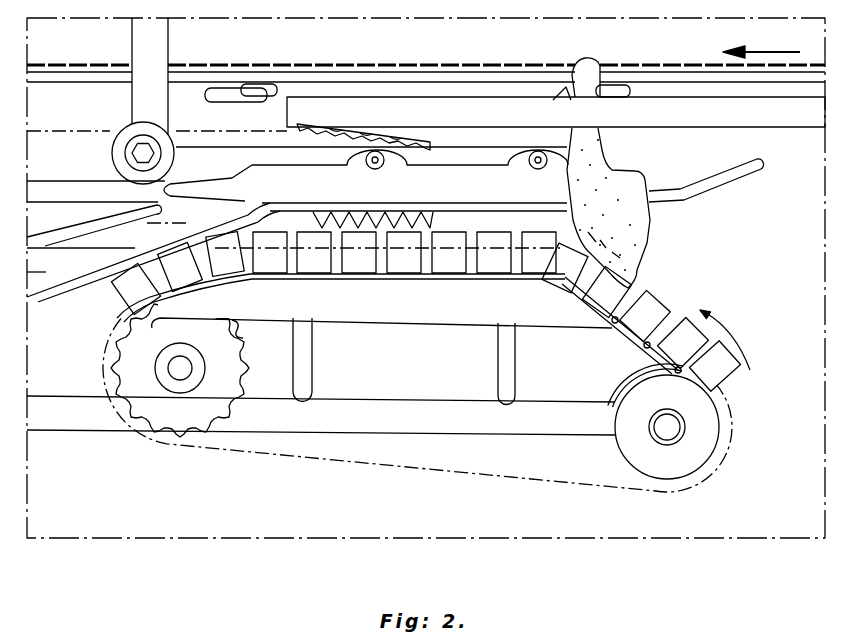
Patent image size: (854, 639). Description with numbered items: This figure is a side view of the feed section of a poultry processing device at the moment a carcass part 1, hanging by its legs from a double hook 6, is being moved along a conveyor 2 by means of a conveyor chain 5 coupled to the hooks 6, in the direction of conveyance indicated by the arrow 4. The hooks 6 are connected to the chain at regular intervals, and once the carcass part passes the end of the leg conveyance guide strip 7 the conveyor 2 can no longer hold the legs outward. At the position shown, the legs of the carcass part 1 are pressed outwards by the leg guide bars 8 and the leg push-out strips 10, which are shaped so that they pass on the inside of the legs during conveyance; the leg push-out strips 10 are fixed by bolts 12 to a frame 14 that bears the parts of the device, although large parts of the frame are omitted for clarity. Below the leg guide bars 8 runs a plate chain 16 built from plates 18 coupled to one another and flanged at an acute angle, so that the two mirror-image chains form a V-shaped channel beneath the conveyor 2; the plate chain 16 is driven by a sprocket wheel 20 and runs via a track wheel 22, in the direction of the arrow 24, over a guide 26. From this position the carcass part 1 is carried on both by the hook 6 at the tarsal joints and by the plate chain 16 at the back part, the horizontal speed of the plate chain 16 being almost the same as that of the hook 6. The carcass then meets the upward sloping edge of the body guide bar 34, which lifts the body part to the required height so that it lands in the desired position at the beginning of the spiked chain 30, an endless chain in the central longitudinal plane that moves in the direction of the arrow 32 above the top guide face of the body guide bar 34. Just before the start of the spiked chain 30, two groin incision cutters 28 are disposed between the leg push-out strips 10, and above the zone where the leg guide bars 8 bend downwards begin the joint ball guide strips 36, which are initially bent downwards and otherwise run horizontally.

The carcass part 1 is at (597, 170).
The conveyor 2 is at (538, 60).
The arrow 4 is at (768, 52).
The conveyor chain 5 is at (440, 64).
The double hook 6 is at (260, 91).
The leg conveyance guide strip 7 is at (795, 118).
The leg guide bar 8 is at (373, 207).
The leg push-out strip 10 is at (470, 186).
The bolt 12 is at (363, 168).
The frame 14 is at (46, 210).
The plate chain 16 is at (522, 482).
The plate 18 is at (135, 288).
The sprocket wheel 20 is at (156, 412).
The track wheel 22 is at (637, 372).
The arrow 24 is at (727, 333).
The guide 26 is at (352, 312).
The groin incision cutter 28 is at (420, 198).
The spiked chain 30 is at (415, 140).
The arrow 32 is at (283, 220).
The body guide bar 34 is at (52, 262).
The joint ball guide strip 36 is at (104, 216).